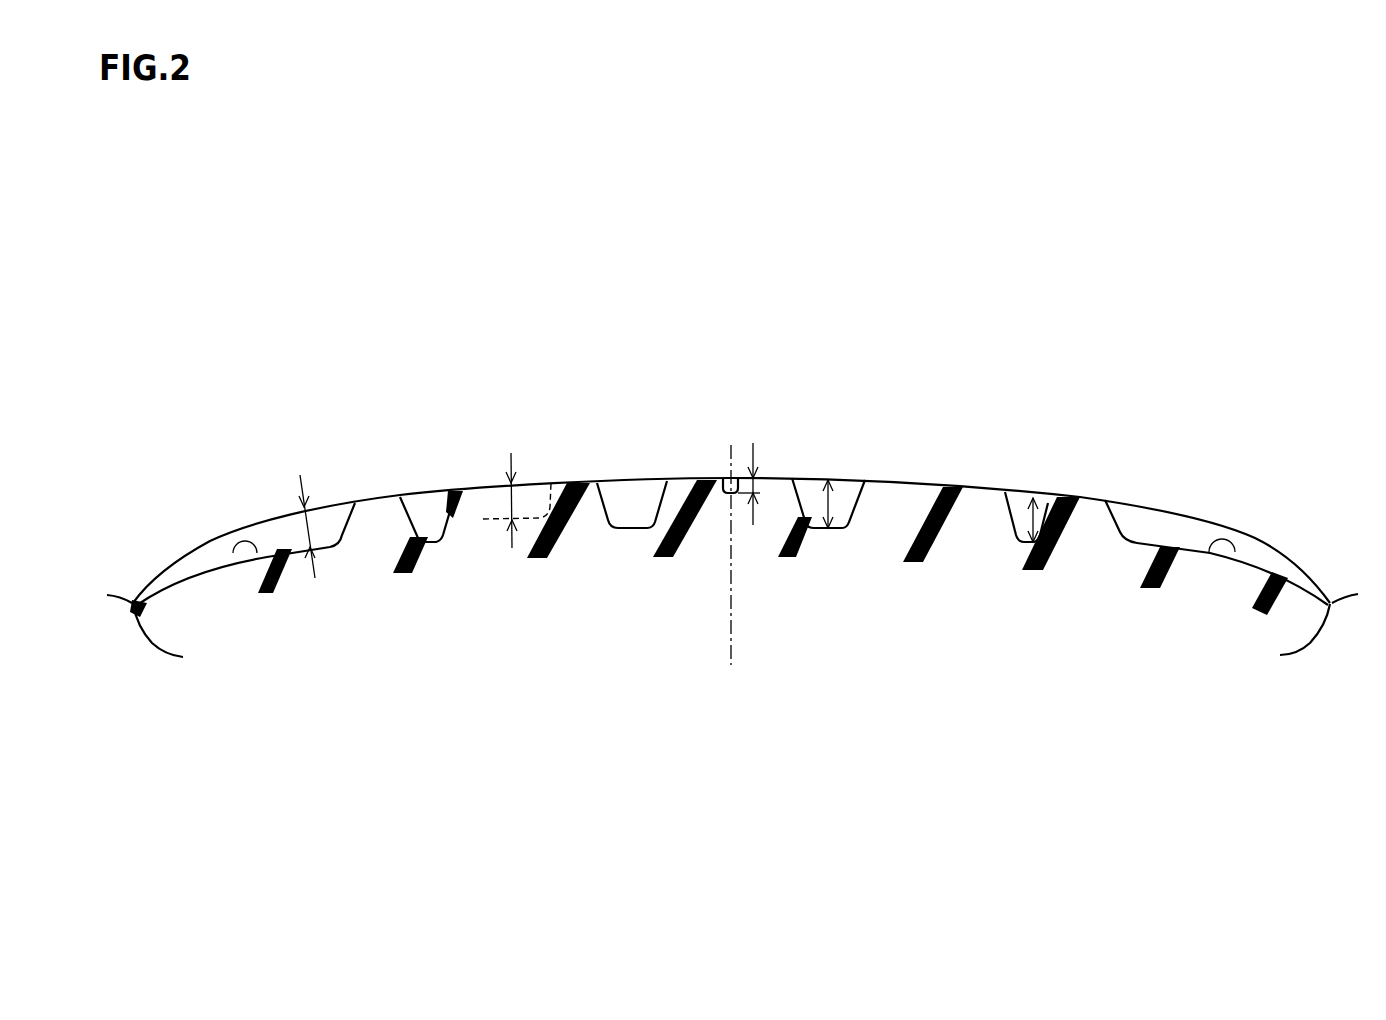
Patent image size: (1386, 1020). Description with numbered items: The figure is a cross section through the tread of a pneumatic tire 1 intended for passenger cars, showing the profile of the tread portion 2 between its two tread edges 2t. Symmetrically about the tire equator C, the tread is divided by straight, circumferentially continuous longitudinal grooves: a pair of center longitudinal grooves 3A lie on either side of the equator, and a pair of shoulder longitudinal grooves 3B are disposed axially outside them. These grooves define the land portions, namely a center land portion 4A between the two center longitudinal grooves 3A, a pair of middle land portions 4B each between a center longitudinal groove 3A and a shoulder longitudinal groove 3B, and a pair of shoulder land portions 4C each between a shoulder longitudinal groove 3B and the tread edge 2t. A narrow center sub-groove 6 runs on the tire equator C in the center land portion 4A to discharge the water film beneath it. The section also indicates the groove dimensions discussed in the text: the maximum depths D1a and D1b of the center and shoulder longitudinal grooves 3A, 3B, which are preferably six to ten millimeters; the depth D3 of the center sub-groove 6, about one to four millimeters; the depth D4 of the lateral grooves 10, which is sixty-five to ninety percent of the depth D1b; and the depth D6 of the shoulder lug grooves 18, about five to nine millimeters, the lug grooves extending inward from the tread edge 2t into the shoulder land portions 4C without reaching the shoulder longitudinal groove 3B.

The pneumatic tire 1 is at (1205, 367).
The tread portion 2 is at (1085, 397).
The tread edge 2t is at (200, 533).
The center longitudinal groove 3A is at (640, 505).
The shoulder longitudinal groove 3B is at (427, 525).
The center land portion 4A is at (713, 476).
The middle land portion 4B is at (539, 477).
The shoulder land portion 4C is at (335, 500).
The center sub-groove 6 is at (730, 496).
The lateral groove 10 is at (483, 519).
The shoulder lug groove 18 is at (233, 553).
The tire equator C is at (732, 572).
The maximum groove depth of center longitudinal groove D1a is at (830, 500).
The maximum groove depth of shoulder longitudinal groove D1b is at (1038, 520).
The groove depth of center sub-groove D3 is at (756, 484).
The groove depth of lateral grooves D4 is at (508, 505).
The groove depth of shoulder lug grooves D6 is at (306, 548).